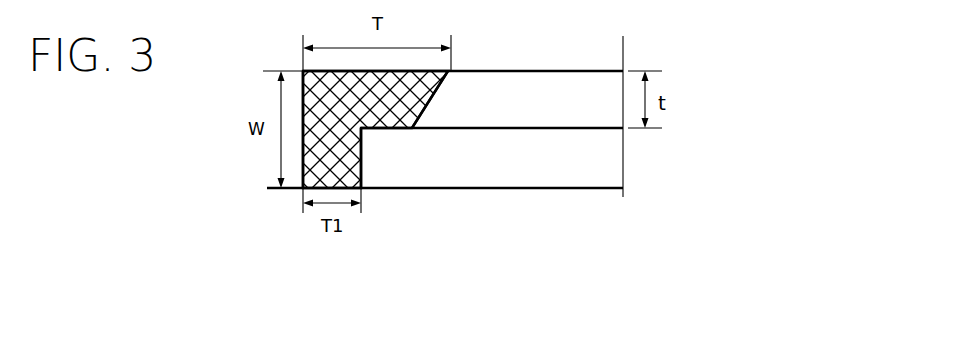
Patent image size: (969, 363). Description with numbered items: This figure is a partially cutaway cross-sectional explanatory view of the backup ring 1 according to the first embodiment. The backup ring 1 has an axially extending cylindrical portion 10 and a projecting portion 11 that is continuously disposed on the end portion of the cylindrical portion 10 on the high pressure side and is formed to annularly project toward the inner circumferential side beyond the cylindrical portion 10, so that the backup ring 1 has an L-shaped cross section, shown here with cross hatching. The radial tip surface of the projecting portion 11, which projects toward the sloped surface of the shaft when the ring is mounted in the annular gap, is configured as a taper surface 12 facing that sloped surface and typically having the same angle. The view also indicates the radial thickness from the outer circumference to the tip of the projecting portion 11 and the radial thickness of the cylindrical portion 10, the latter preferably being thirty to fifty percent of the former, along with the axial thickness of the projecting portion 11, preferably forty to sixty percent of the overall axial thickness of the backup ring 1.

The backup ring 1 is at (540, 212).
The cylindrical portion 10 is at (362, 178).
The projecting portion 11 is at (405, 131).
The taper surface 12 is at (442, 91).